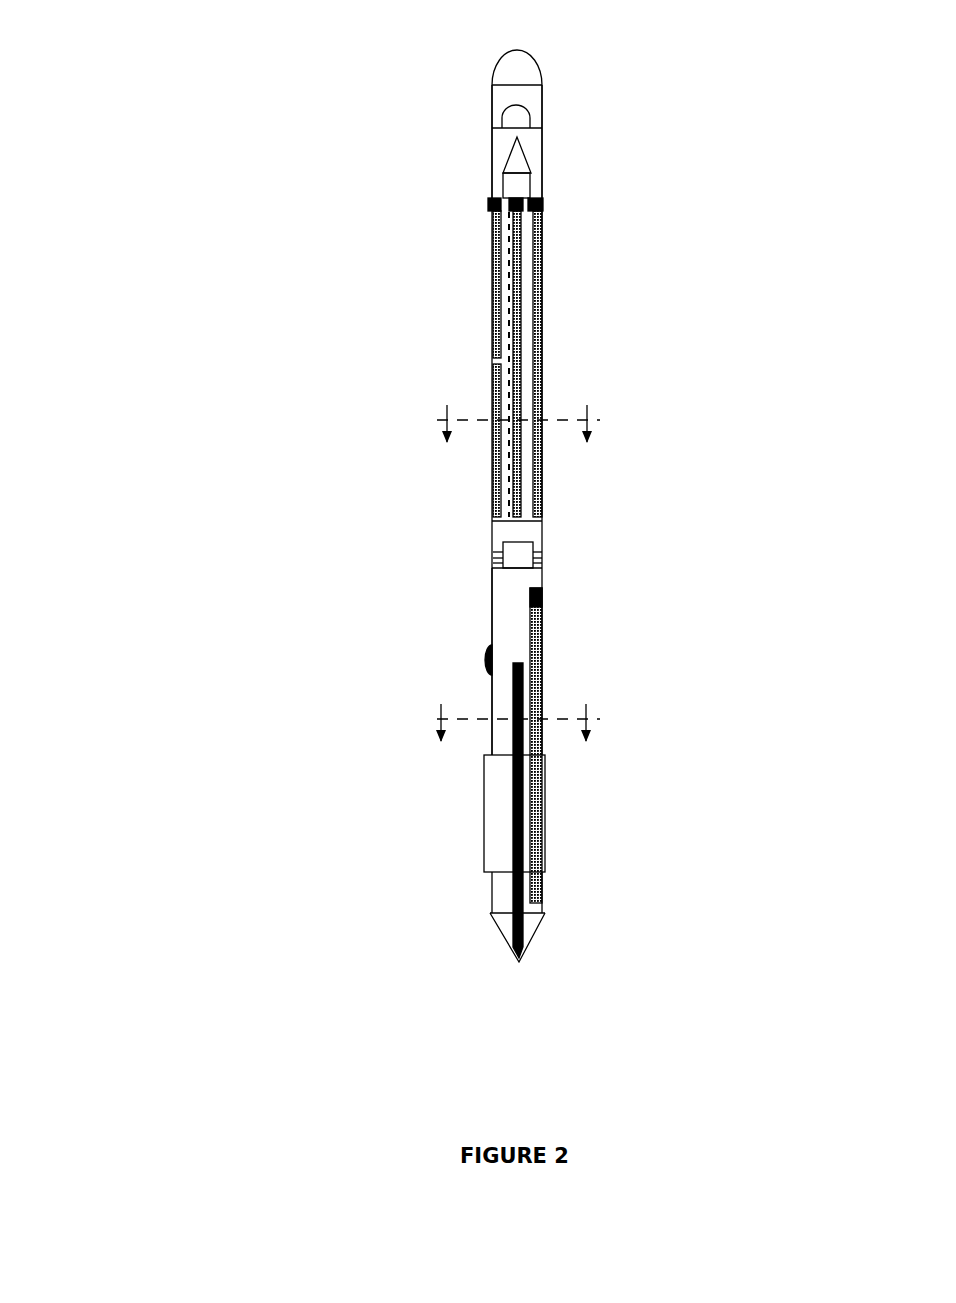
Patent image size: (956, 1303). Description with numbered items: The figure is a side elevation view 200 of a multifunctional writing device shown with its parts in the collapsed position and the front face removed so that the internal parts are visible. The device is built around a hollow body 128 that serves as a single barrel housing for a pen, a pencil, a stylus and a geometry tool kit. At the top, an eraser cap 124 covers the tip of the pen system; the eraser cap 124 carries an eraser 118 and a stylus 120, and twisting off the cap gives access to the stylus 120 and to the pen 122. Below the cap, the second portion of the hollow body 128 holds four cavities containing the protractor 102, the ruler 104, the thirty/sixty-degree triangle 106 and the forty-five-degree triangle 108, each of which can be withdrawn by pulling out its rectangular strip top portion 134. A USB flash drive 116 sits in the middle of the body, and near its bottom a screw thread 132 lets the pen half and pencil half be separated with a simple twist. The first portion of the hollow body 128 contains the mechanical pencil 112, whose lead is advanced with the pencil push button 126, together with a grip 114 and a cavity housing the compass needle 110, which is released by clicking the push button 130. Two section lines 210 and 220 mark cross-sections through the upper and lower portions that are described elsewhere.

The side elevation view 200 is at (180, 1057).
The eraser 118 is at (532, 51).
The stylus 120 is at (532, 115).
The pen 122 is at (526, 150).
The eraser cap 124 is at (545, 185).
The rectangular strip top portion 134 is at (489, 200).
The protractor 102 is at (492, 252).
The ruler 104 is at (518, 297).
The thirty/sixty-degree triangle 106 is at (539, 333).
The forty-five-degree triangle 108 is at (515, 377).
The section line 210- 210 is at (515, 423).
The USB flash drive 116 is at (504, 545).
The screw thread 132 is at (544, 560).
The hollow body 128 is at (492, 612).
The push button 130 is at (545, 600).
The compass needle 110 is at (547, 815).
The pencil push button 126 is at (486, 658).
The section line 220- 220 is at (515, 722).
The grip 114 is at (485, 815).
The pencil 112 is at (501, 937).